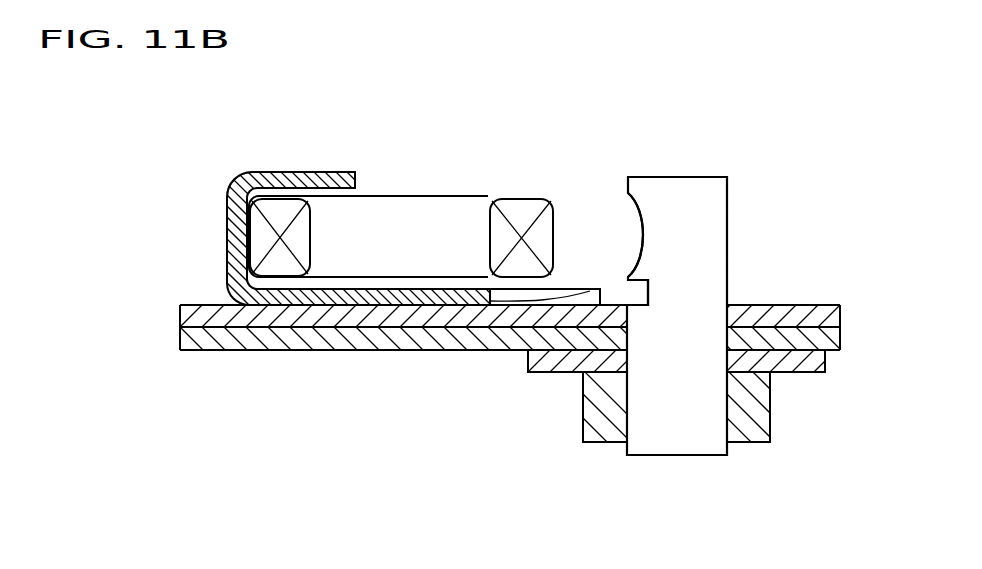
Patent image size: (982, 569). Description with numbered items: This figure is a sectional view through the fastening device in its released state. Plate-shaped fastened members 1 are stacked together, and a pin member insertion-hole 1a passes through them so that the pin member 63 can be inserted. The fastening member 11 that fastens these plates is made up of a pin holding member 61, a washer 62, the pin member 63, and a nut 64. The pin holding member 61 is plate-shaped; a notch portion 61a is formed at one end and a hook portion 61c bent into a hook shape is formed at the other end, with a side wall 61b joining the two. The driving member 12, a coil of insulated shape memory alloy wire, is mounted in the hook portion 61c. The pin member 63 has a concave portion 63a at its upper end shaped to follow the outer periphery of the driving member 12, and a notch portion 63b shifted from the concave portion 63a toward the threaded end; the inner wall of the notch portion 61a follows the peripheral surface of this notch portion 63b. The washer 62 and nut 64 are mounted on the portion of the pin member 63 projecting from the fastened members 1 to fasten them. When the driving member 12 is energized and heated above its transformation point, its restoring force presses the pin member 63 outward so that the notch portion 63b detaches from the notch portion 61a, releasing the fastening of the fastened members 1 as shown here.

The fastened member 1 is at (251, 340).
The pin member insertion-hole 1a is at (627, 317).
The fastening member 11 is at (708, 138).
The driving member 12 is at (516, 190).
The pin holding member 61 is at (331, 209).
The notch portion 61a is at (584, 287).
The bracket side wall 61b is at (232, 242).
The hook portion 61c is at (302, 172).
The washer 62 is at (563, 366).
The pin member 63 is at (740, 178).
The concave portion 63a is at (633, 217).
The notch portion 63b is at (643, 298).
The nut 64 is at (607, 438).